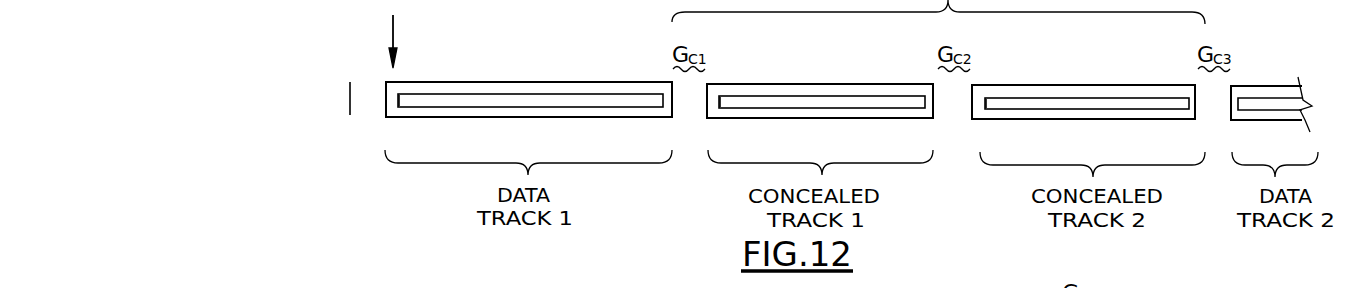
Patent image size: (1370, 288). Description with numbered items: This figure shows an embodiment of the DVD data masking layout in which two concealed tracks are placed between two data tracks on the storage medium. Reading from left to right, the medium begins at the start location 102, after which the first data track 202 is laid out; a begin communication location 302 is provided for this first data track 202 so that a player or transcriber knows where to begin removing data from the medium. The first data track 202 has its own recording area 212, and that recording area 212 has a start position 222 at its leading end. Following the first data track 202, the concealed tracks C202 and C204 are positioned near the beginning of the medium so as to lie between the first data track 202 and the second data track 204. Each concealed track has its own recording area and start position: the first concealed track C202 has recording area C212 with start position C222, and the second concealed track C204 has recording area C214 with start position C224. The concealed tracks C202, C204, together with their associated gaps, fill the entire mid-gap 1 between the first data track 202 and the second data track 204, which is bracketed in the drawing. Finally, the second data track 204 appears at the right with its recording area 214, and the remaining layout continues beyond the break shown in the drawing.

The concealed track region 1 is at (938, 12).
The start location 102 is at (348, 98).
The begin communication location 302 is at (393, 22).
The first data track 202 is at (410, 89).
The recording area 212 is at (430, 100).
The start position 222 is at (402, 99).
The concealed track C202 is at (740, 92).
The recording area C212 is at (762, 103).
The start position C222 is at (723, 102).
The concealed track C204 is at (1005, 92).
The recording area C214 is at (1027, 103).
The start position C224 is at (988, 103).
The second data track 204 is at (1238, 92).
The recording area 214 is at (1258, 103).